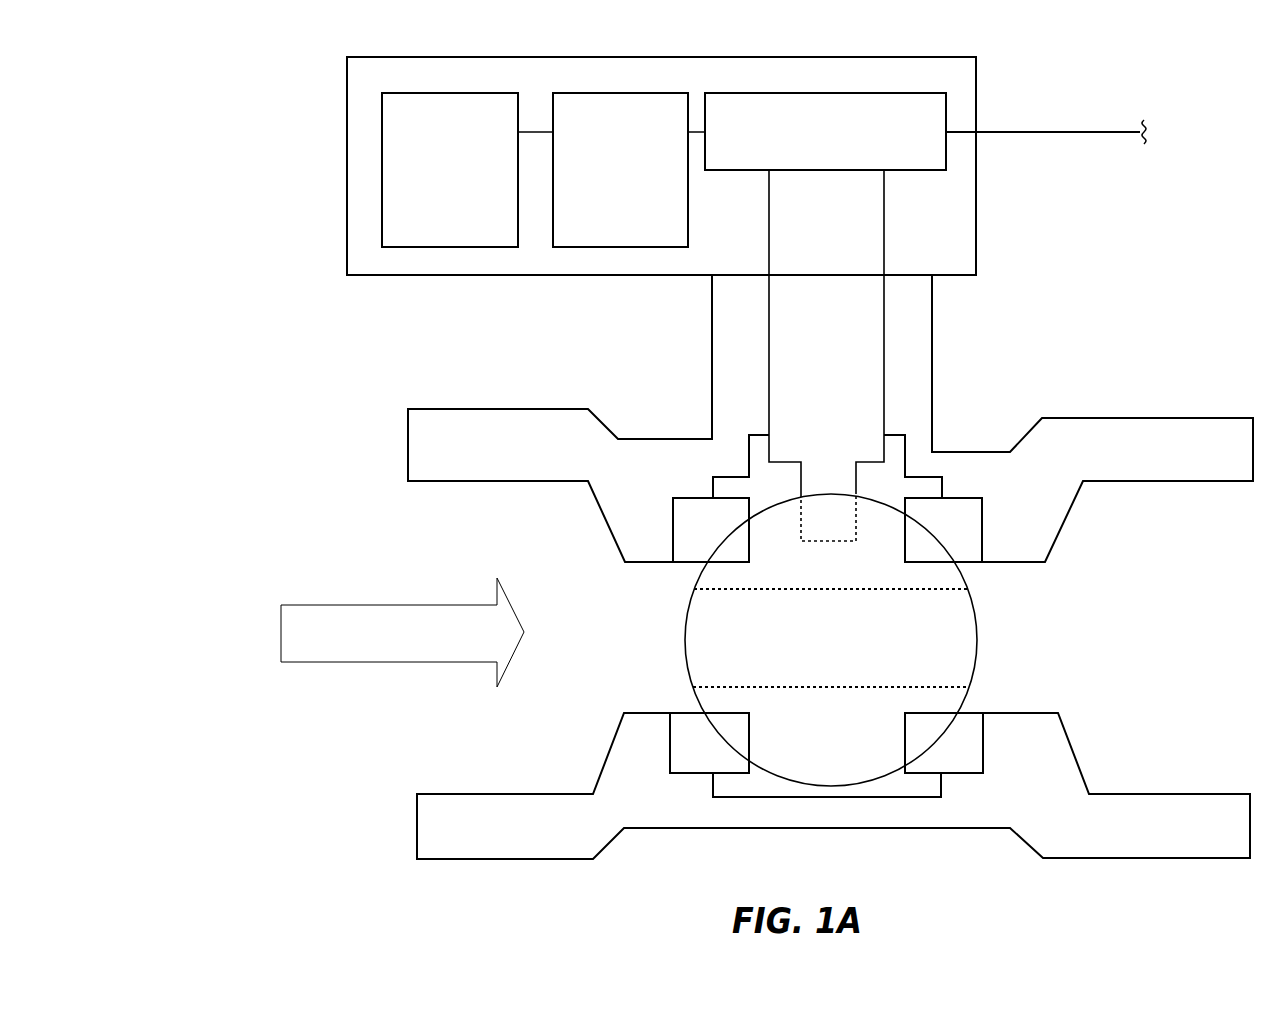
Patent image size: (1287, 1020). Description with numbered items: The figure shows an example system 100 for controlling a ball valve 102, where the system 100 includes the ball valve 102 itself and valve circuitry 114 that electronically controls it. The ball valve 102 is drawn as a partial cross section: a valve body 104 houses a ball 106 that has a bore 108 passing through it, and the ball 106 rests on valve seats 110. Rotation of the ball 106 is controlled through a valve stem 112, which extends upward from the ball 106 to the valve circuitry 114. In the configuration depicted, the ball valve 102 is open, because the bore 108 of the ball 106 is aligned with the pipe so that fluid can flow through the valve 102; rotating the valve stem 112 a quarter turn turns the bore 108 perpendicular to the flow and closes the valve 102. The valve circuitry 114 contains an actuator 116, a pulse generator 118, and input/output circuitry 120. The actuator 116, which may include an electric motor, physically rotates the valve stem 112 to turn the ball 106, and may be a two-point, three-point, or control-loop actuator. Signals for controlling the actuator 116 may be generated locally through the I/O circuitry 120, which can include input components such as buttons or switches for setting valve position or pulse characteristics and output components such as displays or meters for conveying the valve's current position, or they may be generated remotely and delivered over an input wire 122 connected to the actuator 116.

The system 100 is at (184, 186).
The ball valve 102 is at (403, 396).
The valve body 104 is at (560, 409).
The ball 106 is at (950, 581).
The bore 108 is at (947, 634).
The valve seats 110 is at (681, 726).
The valve stem 112 is at (858, 340).
The valve circuitry 114 is at (347, 129).
The actuator 116 is at (808, 93).
The pulse generator 118 is at (627, 93).
The input/output (I/O) circuitry 120 is at (435, 93).
The input wire 122 is at (1085, 130).